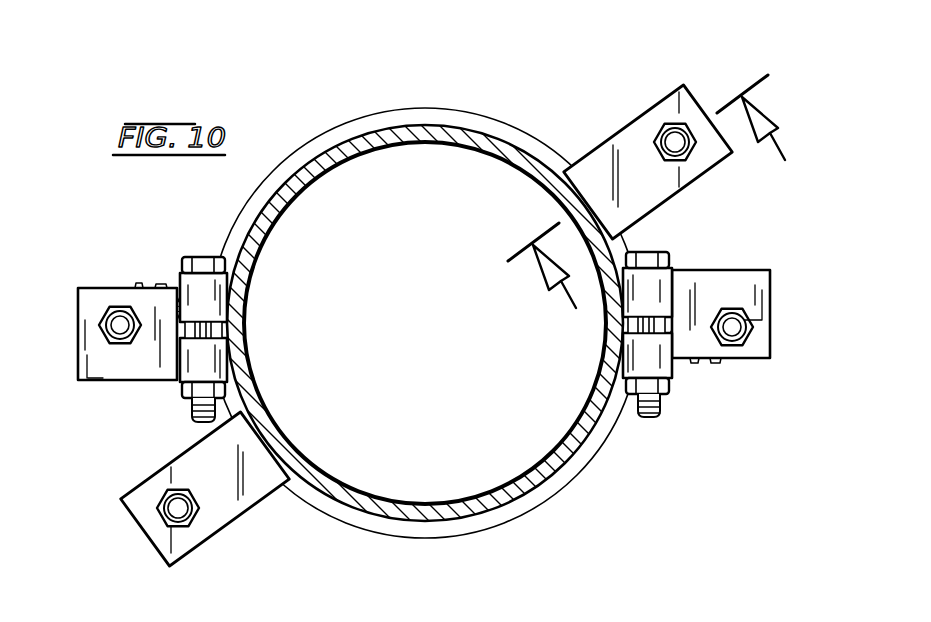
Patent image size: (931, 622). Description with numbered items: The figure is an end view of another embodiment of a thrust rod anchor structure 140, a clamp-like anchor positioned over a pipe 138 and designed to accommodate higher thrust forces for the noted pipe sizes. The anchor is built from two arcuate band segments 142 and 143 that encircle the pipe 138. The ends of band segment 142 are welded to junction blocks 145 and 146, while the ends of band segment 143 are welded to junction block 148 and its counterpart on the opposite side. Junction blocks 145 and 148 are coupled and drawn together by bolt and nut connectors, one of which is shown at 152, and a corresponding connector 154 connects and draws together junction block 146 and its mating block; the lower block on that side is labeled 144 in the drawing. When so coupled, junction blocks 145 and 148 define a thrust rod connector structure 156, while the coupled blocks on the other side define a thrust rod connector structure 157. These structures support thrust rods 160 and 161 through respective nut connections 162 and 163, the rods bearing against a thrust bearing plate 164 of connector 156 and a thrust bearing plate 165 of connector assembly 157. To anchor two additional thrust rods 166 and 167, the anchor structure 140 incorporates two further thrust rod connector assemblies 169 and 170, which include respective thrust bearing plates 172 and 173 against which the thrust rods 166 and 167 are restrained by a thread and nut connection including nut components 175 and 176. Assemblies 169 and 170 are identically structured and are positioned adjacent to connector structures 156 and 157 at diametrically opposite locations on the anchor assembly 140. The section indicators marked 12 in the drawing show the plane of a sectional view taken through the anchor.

The section line 12- 12 is at (646, 190).
The pipe 138 is at (423, 135).
The thrust rod anchor structure 140 is at (366, 84).
The arcuate band segment 142 is at (463, 120).
The arcuate band segment 143 is at (448, 528).
The lower clamp block 144 is at (670, 368).
The junction block 145 is at (187, 280).
The junction block 146 is at (663, 277).
The junction block 148 is at (197, 365).
The bolt and nut connector 152 is at (204, 257).
The bolt and nut connector 154 is at (653, 254).
The thrust rod connector structure 156 is at (128, 315).
The thrust rod connector structure 157 is at (727, 313).
The thrust rod 160 is at (118, 328).
The thrust rod 161 is at (736, 329).
The nut connection 162 is at (105, 310).
The nut connection 163 is at (747, 315).
The thrust bearing plate 164 is at (100, 358).
The thrust bearing plate 165 is at (755, 289).
The thrust rod 166 is at (188, 516).
The thrust rod 167 is at (676, 128).
The thrust rod connector assembly 169 is at (181, 500).
The thrust rod connector assembly 170 is at (666, 128).
The thrust bearing plate 172 is at (140, 498).
The thrust bearing plate 173 is at (635, 145).
The nut component 175 is at (200, 508).
The nut component 176 is at (692, 160).